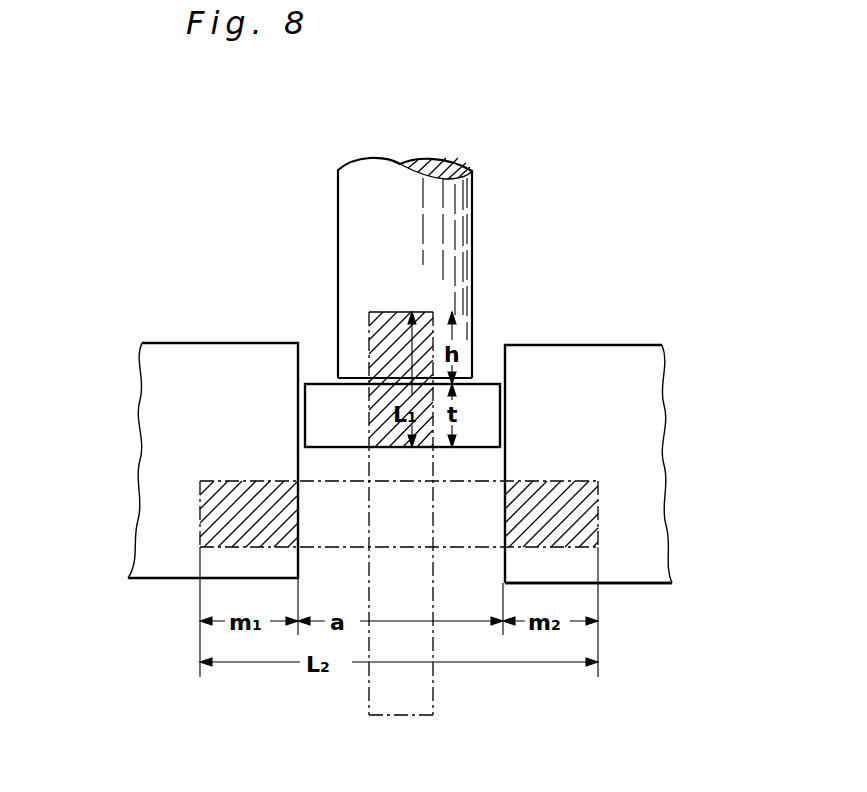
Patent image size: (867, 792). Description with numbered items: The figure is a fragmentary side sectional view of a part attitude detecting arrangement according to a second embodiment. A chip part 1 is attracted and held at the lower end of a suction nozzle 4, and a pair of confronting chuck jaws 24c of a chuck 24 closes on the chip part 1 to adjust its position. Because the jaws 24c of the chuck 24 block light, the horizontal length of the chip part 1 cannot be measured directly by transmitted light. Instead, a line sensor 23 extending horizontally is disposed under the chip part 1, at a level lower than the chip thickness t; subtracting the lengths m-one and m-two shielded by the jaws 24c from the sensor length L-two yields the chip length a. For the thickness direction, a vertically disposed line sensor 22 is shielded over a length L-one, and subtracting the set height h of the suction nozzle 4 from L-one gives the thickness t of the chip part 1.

The suction nozzle 4 is at (448, 198).
The chip part 1 is at (485, 405).
The line sensor 22 is at (375, 333).
The line sensor 23 is at (205, 498).
The chuck 24 is at (650, 530).
The chuck jaws 24c is at (648, 573).